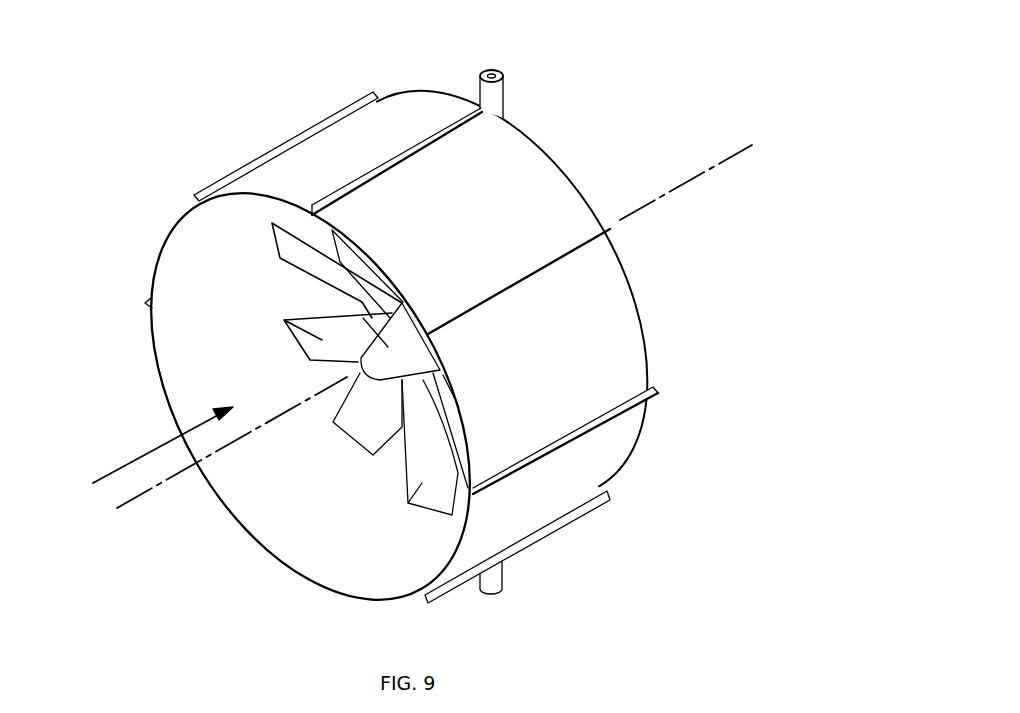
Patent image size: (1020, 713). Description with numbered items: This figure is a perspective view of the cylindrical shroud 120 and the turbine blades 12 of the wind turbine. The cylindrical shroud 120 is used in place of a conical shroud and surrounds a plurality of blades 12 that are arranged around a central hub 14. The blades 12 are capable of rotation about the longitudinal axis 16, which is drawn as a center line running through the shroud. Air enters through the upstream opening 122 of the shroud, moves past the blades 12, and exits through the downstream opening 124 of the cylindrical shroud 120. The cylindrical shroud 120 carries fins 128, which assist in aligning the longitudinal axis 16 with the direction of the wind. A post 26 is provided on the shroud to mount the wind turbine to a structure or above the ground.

The blades 12 is at (290, 331).
The hub 14 is at (400, 301).
The longitudinal axis 16 is at (702, 177).
The post 26 is at (493, 582).
The cylindrical shroud 120 is at (563, 227).
The upstream opening 122 is at (149, 450).
The downstream opening 124 is at (567, 165).
The fins 128 is at (325, 119).